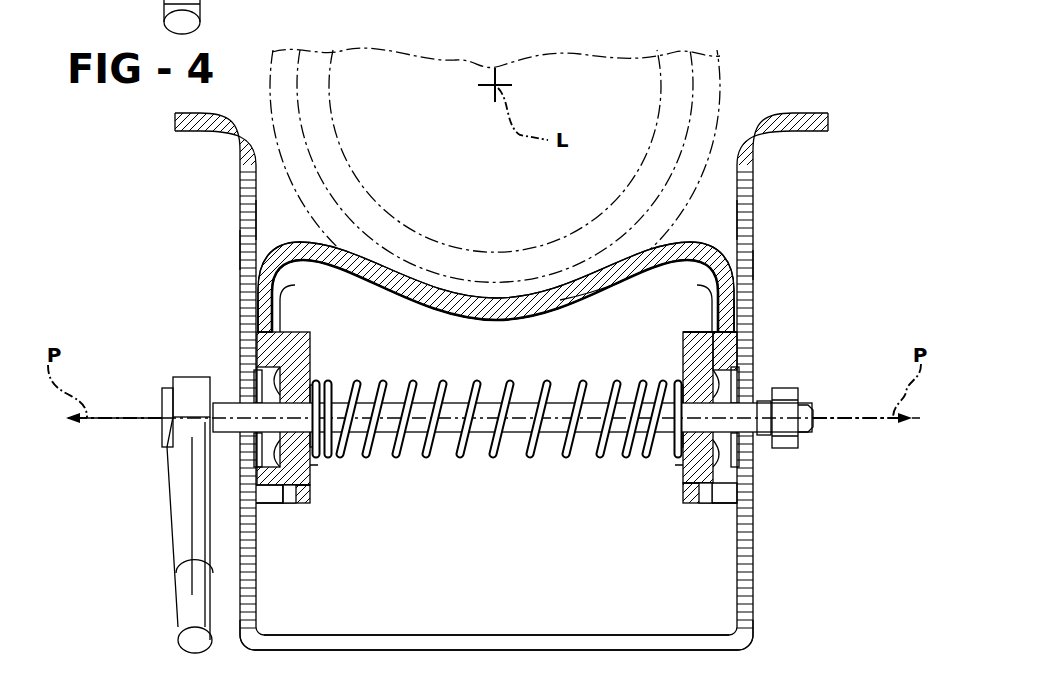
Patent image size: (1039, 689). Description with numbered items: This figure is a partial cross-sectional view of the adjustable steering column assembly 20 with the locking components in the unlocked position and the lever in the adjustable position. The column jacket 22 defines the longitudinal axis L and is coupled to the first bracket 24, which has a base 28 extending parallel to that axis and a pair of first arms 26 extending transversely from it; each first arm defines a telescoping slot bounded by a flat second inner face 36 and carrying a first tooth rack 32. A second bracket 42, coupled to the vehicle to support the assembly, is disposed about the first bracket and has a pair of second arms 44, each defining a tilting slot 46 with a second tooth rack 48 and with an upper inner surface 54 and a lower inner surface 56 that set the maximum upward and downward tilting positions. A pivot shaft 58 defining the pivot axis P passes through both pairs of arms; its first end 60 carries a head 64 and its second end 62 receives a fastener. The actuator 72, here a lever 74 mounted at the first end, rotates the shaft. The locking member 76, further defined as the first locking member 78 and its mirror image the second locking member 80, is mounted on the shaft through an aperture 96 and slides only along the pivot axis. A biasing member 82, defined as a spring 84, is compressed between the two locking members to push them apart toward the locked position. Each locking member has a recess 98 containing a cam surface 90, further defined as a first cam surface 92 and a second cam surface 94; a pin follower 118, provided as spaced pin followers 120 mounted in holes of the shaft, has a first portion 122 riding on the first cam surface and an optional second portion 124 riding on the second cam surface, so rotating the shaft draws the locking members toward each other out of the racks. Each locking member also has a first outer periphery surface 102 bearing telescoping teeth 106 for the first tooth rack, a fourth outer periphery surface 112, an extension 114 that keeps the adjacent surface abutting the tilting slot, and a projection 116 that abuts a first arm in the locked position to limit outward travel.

The adjustable steering column assembly 20 is at (92, 182).
The column jacket 22 is at (722, 75).
The first bracket 24 is at (735, 230).
The first arms 26 is at (235, 304).
The base 28 is at (578, 300).
The first tooth rack 32 is at (270, 510).
The second inner face 36 is at (285, 322).
The second bracket 42 is at (515, 645).
The second arms 44 is at (242, 143).
The tilting slot 46 is at (242, 228).
The second tooth rack 48 is at (247, 250).
The upper inner surface 54 is at (240, 193).
The lower inner surface 56 is at (258, 548).
The pivot shaft 58 is at (410, 460).
The first end 60 is at (232, 441).
The second end 62 is at (812, 405).
The head 64 is at (168, 433).
The actuator 72 is at (146, 537).
The lever 74 is at (178, 617).
The locking member 76 is at (212, 311).
The first locking member 78 is at (322, 352).
The second locking member 80 is at (688, 340).
The biasing member 82 is at (506, 476).
The spring 84 is at (535, 462).
The cam surface 90 is at (240, 390).
The first cam surface 92 is at (240, 392).
The second cam surface 94 is at (244, 495).
The aperture 96 is at (312, 465).
The recess 98 is at (240, 437).
The first outer periphery surface 102 is at (296, 510).
The telescoping teeth 106 is at (290, 503).
The fourth outer periphery surface 112 is at (300, 301).
The extension 114 is at (216, 356).
The projection 116 is at (294, 498).
The pin follower 118 is at (320, 346).
The pin followers 120 is at (316, 375).
The first portion 122 is at (238, 389).
The second portion 124 is at (240, 440).